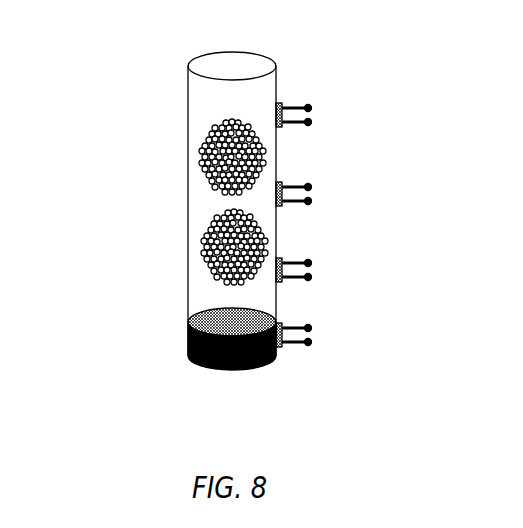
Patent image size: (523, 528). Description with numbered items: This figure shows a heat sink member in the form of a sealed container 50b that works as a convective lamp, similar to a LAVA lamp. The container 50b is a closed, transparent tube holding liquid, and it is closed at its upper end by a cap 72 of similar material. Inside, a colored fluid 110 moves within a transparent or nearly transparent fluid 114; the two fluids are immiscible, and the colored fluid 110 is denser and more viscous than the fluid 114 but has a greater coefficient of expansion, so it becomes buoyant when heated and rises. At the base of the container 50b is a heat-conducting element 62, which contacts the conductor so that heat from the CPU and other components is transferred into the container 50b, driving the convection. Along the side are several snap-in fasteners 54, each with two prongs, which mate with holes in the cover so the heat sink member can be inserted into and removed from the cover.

The sealed container 50b is at (188, 195).
The cap 72 is at (230, 65).
The colored fluid 110 is at (205, 172).
The transparent fluid 114 is at (205, 287).
The heat-conducting element 62 is at (192, 338).
The snap-in fastener 54 is at (323, 263).